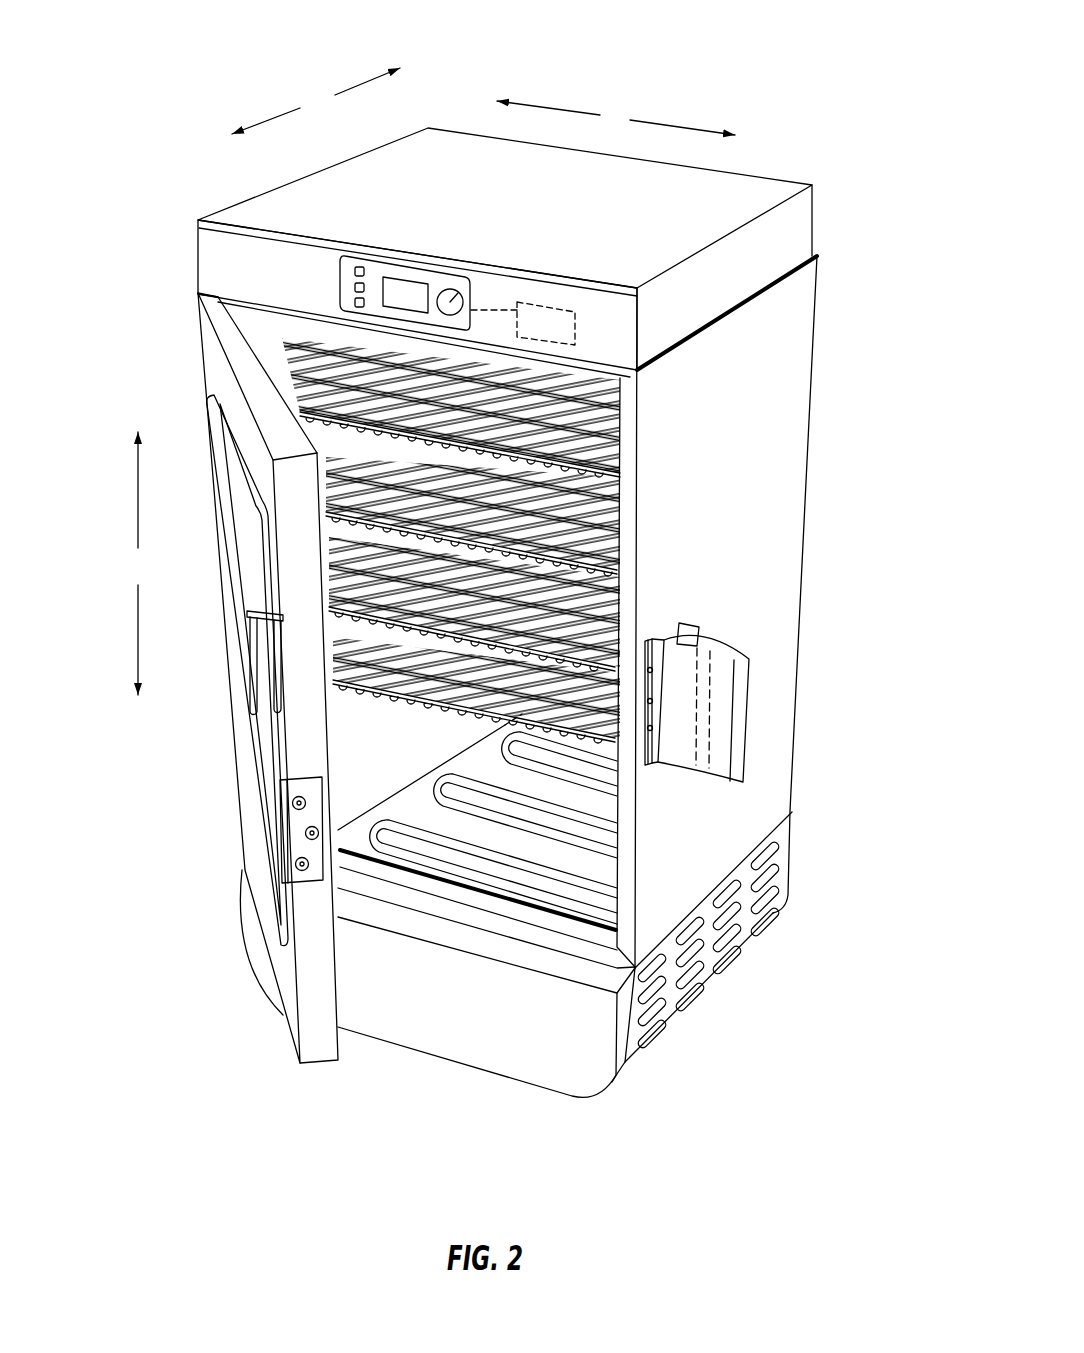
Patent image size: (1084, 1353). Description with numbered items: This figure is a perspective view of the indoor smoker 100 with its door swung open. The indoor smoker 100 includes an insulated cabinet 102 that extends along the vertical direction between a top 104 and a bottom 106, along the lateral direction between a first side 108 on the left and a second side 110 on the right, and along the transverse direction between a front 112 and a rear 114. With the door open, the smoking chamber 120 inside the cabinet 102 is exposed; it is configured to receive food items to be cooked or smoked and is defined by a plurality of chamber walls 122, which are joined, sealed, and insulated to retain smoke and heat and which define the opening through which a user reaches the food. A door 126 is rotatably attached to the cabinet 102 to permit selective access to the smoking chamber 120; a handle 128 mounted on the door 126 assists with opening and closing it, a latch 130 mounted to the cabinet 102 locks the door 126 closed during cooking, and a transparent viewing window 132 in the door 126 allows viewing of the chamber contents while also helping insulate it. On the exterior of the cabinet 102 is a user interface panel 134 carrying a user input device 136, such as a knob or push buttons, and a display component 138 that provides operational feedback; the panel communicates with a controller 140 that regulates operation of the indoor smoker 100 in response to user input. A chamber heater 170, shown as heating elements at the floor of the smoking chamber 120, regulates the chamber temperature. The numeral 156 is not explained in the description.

The indoor smoker 100 is at (815, 68).
The insulated cabinet 102 is at (778, 395).
The top 104 is at (740, 180).
The bottom 106 is at (508, 1090).
The first side 108 is at (205, 268).
The second side 110 is at (790, 555).
The front 112 is at (240, 258).
The rear 114 is at (818, 292).
The smoking chamber 120 is at (397, 745).
The chamber walls 122 is at (282, 338).
The door 126 is at (235, 340).
The handle 128 is at (258, 655).
The latch 130 is at (742, 675).
The transparent viewing window 132 is at (270, 822).
The user interface panel 134 is at (418, 255).
The user input device 136 is at (358, 267).
The display component 138 is at (415, 293).
The controller 140 is at (545, 300).
The incubator system 156 is at (158, 125).
The chamber heater 170 is at (551, 892).